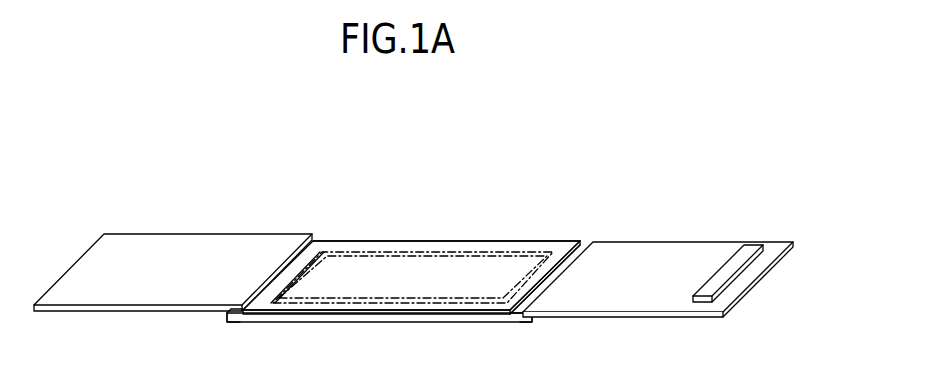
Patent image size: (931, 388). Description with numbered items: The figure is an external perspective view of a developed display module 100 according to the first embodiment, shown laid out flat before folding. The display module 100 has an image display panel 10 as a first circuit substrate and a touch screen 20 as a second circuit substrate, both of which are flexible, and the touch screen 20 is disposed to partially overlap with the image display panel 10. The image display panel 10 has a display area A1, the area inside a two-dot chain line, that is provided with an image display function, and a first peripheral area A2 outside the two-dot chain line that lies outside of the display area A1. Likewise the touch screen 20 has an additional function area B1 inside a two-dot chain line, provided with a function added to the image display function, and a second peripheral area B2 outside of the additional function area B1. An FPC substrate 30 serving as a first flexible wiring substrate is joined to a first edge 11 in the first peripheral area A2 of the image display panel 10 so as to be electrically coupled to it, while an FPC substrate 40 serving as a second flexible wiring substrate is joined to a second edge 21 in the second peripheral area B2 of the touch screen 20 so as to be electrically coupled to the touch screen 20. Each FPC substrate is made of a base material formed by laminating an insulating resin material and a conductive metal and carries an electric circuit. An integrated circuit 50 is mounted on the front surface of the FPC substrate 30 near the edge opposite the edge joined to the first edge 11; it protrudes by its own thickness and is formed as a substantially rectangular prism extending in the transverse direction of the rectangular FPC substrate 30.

The display module 100 is at (697, 180).
The image display panel 10 is at (315, 323).
The first edge 11 is at (523, 323).
The touch screen 20 is at (323, 240).
The second edge 21 is at (232, 313).
The FPC substrate 30 is at (615, 292).
The FPC substrate 40 is at (160, 245).
The integrated circuit 50 is at (745, 253).
The display area A1 is at (420, 305).
The first peripheral area A2 is at (507, 312).
The additional function area B1 is at (425, 242).
The second peripheral area B2 is at (363, 246).